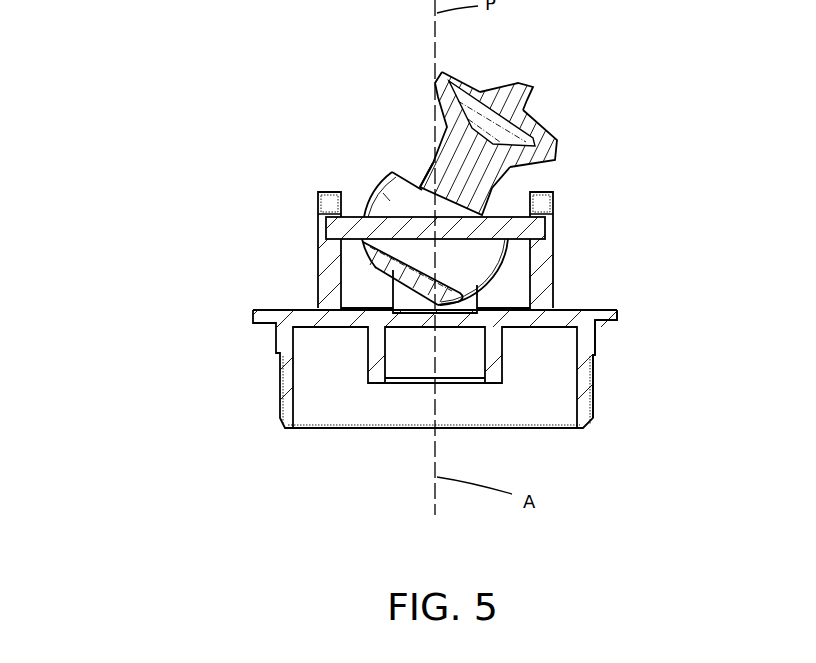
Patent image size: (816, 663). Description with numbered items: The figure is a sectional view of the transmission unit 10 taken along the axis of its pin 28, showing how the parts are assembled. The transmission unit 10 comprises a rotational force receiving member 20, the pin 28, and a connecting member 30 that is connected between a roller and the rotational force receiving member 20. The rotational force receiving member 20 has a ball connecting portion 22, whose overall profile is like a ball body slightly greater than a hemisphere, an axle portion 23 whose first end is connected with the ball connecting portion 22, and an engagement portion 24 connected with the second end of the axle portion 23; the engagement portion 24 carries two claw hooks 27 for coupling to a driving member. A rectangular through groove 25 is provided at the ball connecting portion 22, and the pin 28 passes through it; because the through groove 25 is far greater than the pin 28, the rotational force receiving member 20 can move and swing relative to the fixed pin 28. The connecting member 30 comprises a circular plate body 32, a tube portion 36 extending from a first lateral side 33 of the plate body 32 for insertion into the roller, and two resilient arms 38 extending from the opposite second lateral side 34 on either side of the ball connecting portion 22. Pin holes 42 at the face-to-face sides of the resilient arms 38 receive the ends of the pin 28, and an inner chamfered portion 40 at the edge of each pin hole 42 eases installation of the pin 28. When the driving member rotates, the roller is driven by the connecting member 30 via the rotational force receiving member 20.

The transmission unit 10 is at (195, 118).
The rotational force receiving member 20 is at (430, 88).
The ball connecting portion 22 is at (370, 270).
The axle portion 23 is at (430, 163).
The engagement portion 24 is at (563, 138).
The rectangular through groove 25 is at (388, 200).
The claw hooks 27 is at (518, 82).
The pin 28 is at (527, 227).
The connecting member 30 is at (285, 337).
The circular plate body 32 is at (607, 320).
The first lateral side 33 is at (600, 322).
The second lateral side 34 is at (580, 310).
The tube portion 36 is at (583, 378).
The resilient arms 38 is at (325, 265).
The inner chamfered portion 40 is at (317, 202).
The pin holes 42 is at (325, 230).